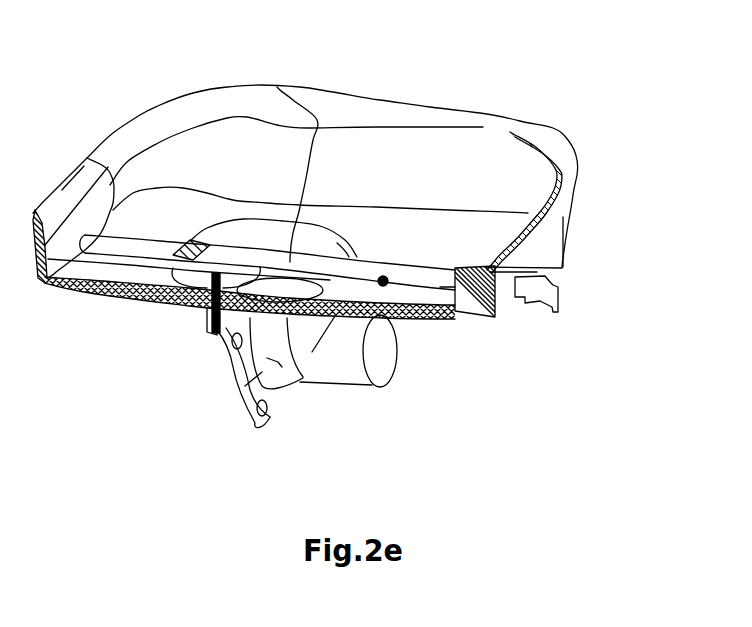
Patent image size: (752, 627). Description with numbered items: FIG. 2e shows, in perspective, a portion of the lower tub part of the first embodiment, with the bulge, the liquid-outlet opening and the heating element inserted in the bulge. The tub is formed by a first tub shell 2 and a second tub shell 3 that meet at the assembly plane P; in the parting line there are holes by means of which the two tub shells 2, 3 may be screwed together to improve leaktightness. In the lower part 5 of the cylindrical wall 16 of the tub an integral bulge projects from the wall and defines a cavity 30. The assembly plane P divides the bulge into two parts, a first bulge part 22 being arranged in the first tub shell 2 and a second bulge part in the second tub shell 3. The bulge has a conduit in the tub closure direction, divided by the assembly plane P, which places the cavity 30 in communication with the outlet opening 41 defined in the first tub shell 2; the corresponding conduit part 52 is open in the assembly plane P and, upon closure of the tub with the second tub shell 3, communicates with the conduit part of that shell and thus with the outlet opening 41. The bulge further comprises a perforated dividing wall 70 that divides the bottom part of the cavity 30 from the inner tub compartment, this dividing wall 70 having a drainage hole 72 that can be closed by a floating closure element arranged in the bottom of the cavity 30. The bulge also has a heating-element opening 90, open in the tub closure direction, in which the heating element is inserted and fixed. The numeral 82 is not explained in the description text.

The first tub shell 2 is at (558, 127).
The second tub shell 3 is at (157, 103).
The lower part of the cylindrical wall 5 is at (536, 253).
The cylindrical wall 16 is at (570, 270).
The first bulge part 22 is at (280, 362).
The cavity 30 is at (363, 182).
The outlet opening 41 is at (376, 343).
The conduit part 52 is at (380, 340).
The perforated dividing wall 70 is at (316, 333).
The drainage hole 72 is at (303, 378).
The stop 82 is at (503, 318).
The heating-element opening 90 is at (483, 312).
The assembly plane P is at (277, 87).